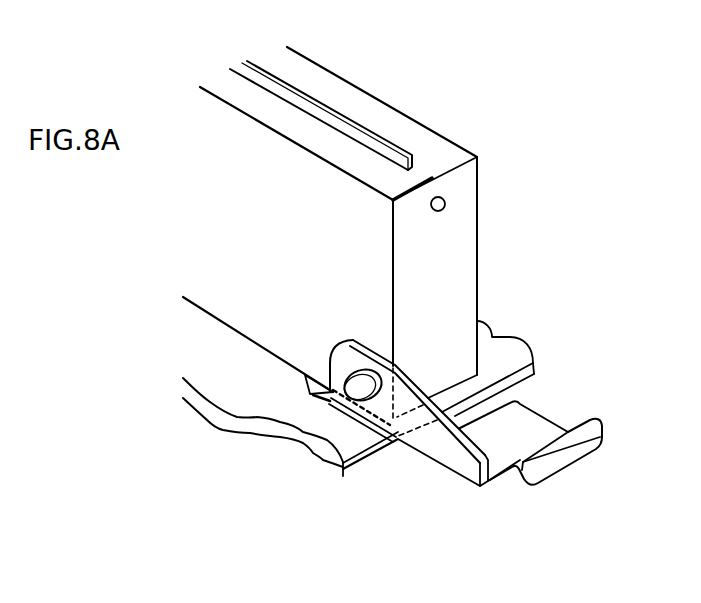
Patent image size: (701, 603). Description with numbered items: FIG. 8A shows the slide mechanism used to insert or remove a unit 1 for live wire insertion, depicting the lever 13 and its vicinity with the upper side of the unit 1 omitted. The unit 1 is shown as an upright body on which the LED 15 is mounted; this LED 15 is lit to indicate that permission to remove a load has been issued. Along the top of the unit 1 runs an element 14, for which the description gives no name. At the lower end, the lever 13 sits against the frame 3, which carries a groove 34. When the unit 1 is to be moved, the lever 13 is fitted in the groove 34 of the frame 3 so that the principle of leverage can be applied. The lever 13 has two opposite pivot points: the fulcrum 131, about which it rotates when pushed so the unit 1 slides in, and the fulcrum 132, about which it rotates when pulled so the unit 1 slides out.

The unit to be inserted or removed by live wire work 1 is at (478, 203).
The rib 14 is at (381, 136).
The LED 15 is at (438, 212).
The lever 13 is at (440, 465).
The fulcrum 131 is at (383, 455).
The fulcrum 132 is at (310, 377).
The groove 34 is at (320, 402).
The frame 3 is at (290, 433).